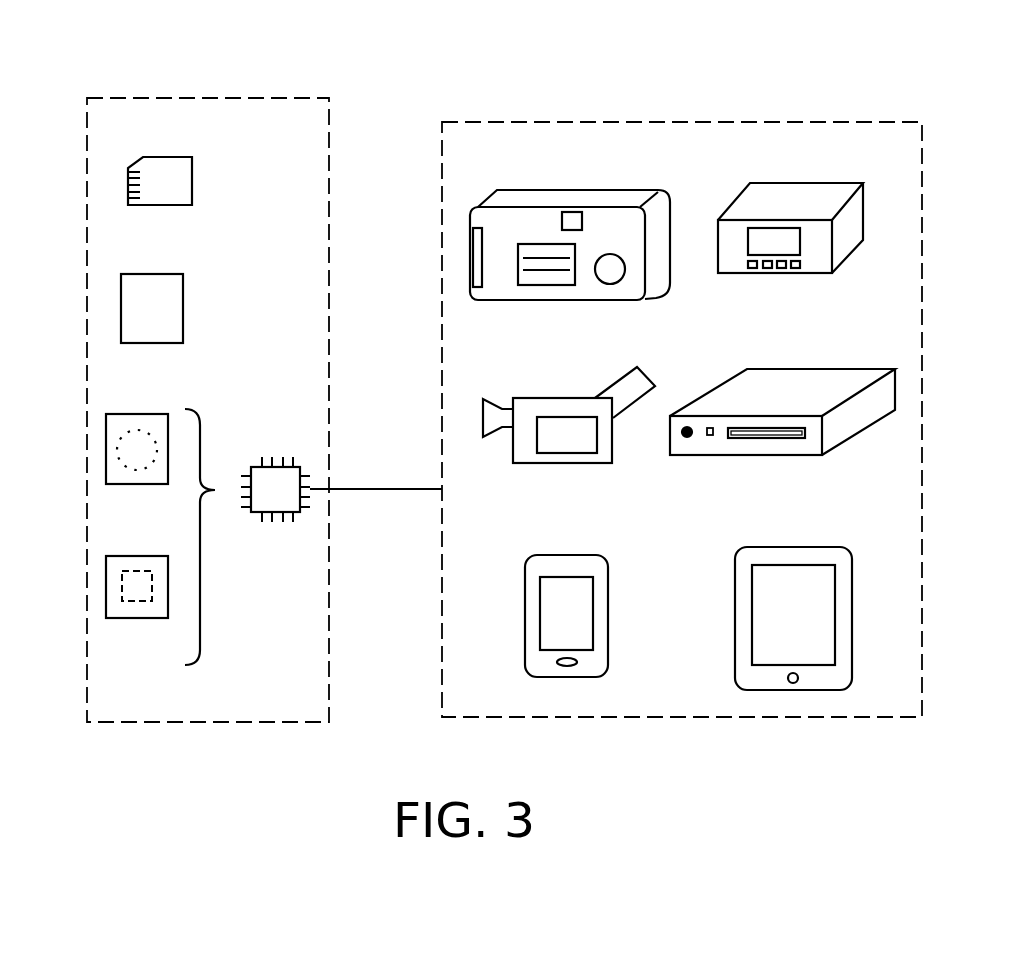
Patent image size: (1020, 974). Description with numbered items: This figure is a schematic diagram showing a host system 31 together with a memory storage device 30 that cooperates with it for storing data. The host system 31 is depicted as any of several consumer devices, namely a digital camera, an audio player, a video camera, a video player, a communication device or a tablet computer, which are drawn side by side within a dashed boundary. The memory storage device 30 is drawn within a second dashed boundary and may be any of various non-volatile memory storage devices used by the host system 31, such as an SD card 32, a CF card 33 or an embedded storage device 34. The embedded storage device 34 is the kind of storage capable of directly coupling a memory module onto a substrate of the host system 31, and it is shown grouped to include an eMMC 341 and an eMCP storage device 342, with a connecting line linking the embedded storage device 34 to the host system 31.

The memory storage device 30 is at (197, 97).
The host system 31 is at (605, 121).
The SD (Secure Digital) card 32 is at (128, 188).
The CF (Compact Flash) card 33 is at (121, 312).
The embedded storage device 34 is at (275, 466).
The eMMC (embedded Multi Media Card) 341 is at (106, 452).
The eMCP (embedded Multi Chip Package) storage device 342 is at (106, 590).